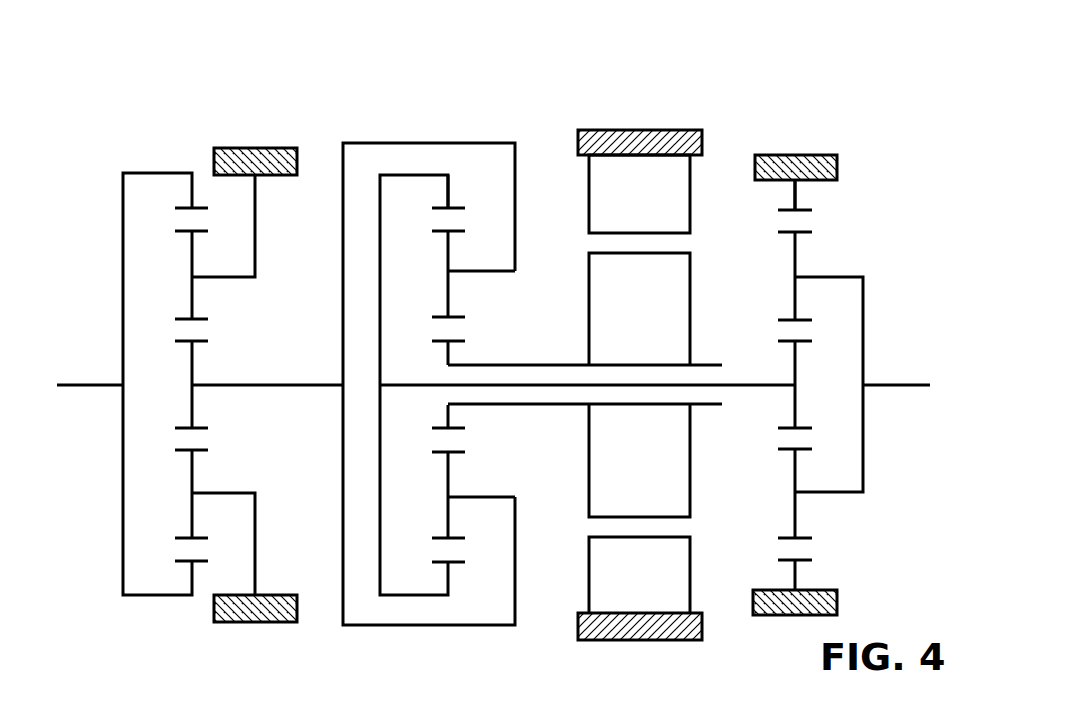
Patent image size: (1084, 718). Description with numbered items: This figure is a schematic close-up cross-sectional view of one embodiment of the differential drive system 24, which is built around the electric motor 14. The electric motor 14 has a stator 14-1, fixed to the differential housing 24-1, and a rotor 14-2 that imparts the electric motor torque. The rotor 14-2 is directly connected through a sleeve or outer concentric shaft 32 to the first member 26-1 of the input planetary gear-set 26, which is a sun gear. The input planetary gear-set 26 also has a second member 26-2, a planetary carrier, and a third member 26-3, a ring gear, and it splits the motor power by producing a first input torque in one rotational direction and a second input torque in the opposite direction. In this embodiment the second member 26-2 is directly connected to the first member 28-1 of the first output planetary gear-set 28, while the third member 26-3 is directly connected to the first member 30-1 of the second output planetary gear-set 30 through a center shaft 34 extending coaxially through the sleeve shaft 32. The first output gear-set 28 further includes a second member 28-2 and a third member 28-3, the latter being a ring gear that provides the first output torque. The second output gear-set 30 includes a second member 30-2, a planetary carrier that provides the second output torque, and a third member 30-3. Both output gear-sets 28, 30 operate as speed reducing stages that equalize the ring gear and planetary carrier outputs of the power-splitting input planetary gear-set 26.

The electric motor 14 is at (714, 169).
The stator 14-1 is at (662, 206).
The rotor 14-2 is at (661, 317).
The differential drive system 24 is at (774, 58).
The differential housing 24-1 is at (597, 130).
The input planetary gear-set 26 is at (448, 130).
The first member of the input planetary gear-set 26-1 is at (458, 341).
The second member of the input planetary gear-set 26-2 is at (478, 273).
The third member of the input planetary gear-set 26-3 is at (460, 207).
The first output gear-set 28 is at (193, 130).
The first member of the first output planetary gear-set 28-1 is at (198, 343).
The second member of the first output planetary gear-set 28-2 is at (257, 247).
The third member of the first output planetary gear-set 28-3 is at (133, 172).
The second output gear-set 30 is at (840, 128).
The first member of the second output planetary gear-set 30-1 is at (803, 344).
The second member of the second output planetary gear-set 30-2 is at (845, 277).
The third member of the second output planetary gear-set 30-3 is at (803, 208).
The sleeve shaft 32 is at (710, 362).
The center shaft 34 is at (743, 389).